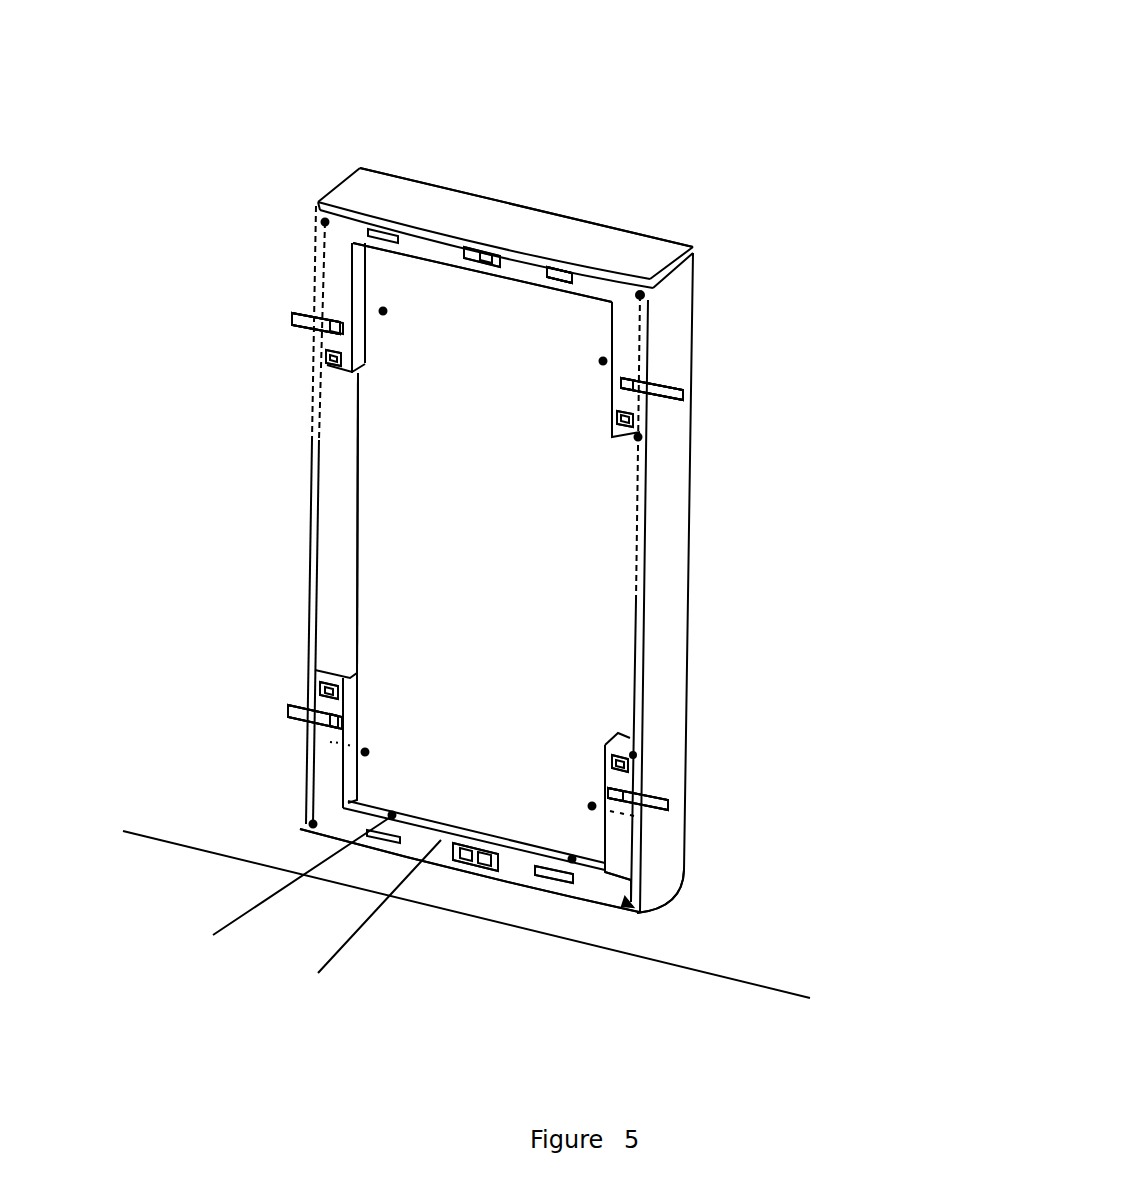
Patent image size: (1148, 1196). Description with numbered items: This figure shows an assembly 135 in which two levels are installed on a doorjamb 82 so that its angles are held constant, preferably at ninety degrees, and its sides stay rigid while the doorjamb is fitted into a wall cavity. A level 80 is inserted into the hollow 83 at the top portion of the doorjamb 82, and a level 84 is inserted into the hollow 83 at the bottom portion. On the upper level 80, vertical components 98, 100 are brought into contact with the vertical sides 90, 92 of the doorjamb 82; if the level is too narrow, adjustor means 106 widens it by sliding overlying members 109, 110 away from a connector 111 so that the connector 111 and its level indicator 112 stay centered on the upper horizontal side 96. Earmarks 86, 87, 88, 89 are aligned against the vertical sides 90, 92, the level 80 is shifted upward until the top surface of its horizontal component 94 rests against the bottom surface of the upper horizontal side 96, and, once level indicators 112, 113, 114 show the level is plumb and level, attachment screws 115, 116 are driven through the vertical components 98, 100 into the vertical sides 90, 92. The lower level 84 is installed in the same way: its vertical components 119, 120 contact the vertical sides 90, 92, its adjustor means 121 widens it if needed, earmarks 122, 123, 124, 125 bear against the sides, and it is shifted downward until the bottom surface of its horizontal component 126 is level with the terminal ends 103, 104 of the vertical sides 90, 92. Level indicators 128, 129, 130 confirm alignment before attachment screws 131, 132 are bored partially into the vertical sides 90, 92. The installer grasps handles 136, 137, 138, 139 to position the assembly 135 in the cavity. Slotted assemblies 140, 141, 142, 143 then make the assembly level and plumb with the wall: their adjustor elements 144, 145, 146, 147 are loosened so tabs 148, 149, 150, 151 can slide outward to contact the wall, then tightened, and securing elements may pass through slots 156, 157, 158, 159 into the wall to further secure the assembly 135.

The assembly 135 is at (728, 56).
The horizontal component 94 is at (426, 242).
The overlying member 109 is at (444, 255).
The handle 136 is at (372, 231).
The connector 111 is at (506, 278).
The level indicator 112 is at (483, 254).
The overlying member 110 is at (528, 233).
The level 80 is at (580, 276).
The upper horizontal side 96 is at (555, 238).
The handle 137 is at (565, 270).
The adjustor means 106 is at (578, 279).
The doorjamb 82 is at (698, 246).
The earmark 86 is at (323, 220).
The attachment screw 115 is at (382, 310).
The vertical component 98 is at (335, 288).
The adjustor element 144 is at (343, 330).
The tab 148 is at (293, 312).
The slotted assembly 140 is at (292, 324).
The slot 156 is at (325, 333).
The earmark 87 is at (325, 360).
The level indicator 113 is at (336, 362).
The vertical side 90 is at (335, 508).
The vertical component 119 is at (330, 766).
The level indicator 128 is at (318, 688).
The earmark 122 is at (322, 690).
The adjustor element 146 is at (342, 723).
The slot 158 is at (335, 714).
The tab 150 is at (290, 708).
The slotted assembly 142 is at (290, 722).
The attachment screw 131 is at (364, 752).
The terminal end 103 is at (303, 831).
The earmark 123 is at (313, 828).
The handle 138 is at (371, 835).
The adjustor means 121 is at (434, 851).
The handle 139 is at (588, 893).
The horizontal component 126 is at (543, 890).
The level indicator 130 is at (478, 862).
The vertical side 92 is at (665, 578).
The hollow 83 is at (600, 553).
The earmark 88 is at (644, 295).
The vertical component 100 is at (627, 327).
The attachment screw 116 is at (618, 366).
The slot 157 is at (668, 383).
The tab 149 is at (660, 400).
The slotted assembly 141 is at (683, 393).
The adjustor element 145 is at (683, 403).
The earmark 89 is at (640, 438).
The level indicator 114 is at (633, 422).
The vertical component 120 is at (620, 843).
The earmark 124 is at (635, 752).
The level indicator 129 is at (633, 763).
The slotted assembly 143 is at (662, 795).
The tab 151 is at (652, 790).
The attachment screw 132 is at (647, 820).
The adjustor element 147 is at (625, 795).
The slot 159 is at (592, 805).
The earmark 125 is at (630, 892).
The terminal end 104 is at (640, 913).
The level 84 is at (629, 906).